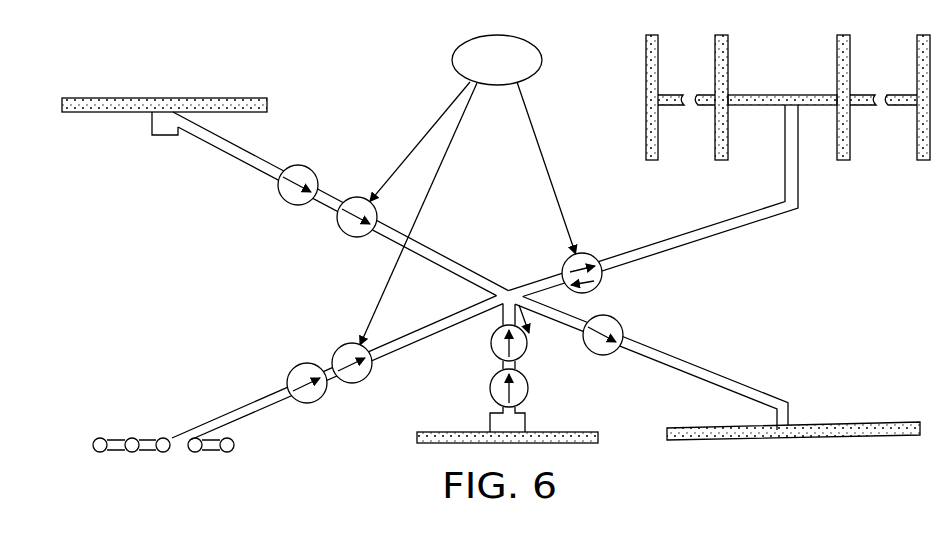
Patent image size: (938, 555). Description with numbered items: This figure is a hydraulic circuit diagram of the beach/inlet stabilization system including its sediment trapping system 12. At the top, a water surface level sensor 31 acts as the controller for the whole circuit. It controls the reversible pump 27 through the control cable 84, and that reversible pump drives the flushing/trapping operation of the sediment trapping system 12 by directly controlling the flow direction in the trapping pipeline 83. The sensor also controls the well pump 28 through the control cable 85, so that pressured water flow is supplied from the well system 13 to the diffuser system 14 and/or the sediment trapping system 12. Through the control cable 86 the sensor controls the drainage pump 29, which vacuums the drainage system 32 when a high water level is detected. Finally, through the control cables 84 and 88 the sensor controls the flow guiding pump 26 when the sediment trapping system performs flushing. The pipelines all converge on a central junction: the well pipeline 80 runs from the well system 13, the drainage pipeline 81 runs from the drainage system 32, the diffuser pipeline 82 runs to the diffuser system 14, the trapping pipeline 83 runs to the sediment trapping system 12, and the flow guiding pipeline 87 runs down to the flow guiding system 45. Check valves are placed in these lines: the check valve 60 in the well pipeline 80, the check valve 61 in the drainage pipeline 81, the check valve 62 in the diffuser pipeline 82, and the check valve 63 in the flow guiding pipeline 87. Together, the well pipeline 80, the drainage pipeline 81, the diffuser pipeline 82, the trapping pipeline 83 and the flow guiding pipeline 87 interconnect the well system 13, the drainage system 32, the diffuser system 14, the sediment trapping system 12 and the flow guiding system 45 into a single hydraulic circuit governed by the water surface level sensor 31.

The sediment trapping system 12 is at (788, 97).
The well system 13 is at (163, 461).
The diffuser system 14 is at (793, 415).
The flow guiding pump 26 is at (489, 331).
The reversible pump 27 is at (599, 280).
The well pump 28 is at (364, 378).
The drainage pump 29 is at (352, 234).
The water surface level sensor 31 is at (497, 60).
The drainage system 32 is at (164, 98).
The flow guiding system 45 is at (509, 421).
The check valve 60 is at (311, 399).
The check valve 61 is at (296, 201).
The check valve 62 is at (597, 350).
The check valve 63 is at (529, 388).
The well pipeline 80 is at (337, 368).
The drainage pipeline 81 is at (340, 204).
The diffuser pipeline 82 is at (651, 364).
The trapping pipeline 83 is at (653, 201).
The control cable 84 is at (554, 168).
The control cable 85 is at (418, 214).
The control cable 86 is at (420, 142).
The flow guiding pipeline 87 is at (488, 372).
The control cable 88 is at (554, 242).